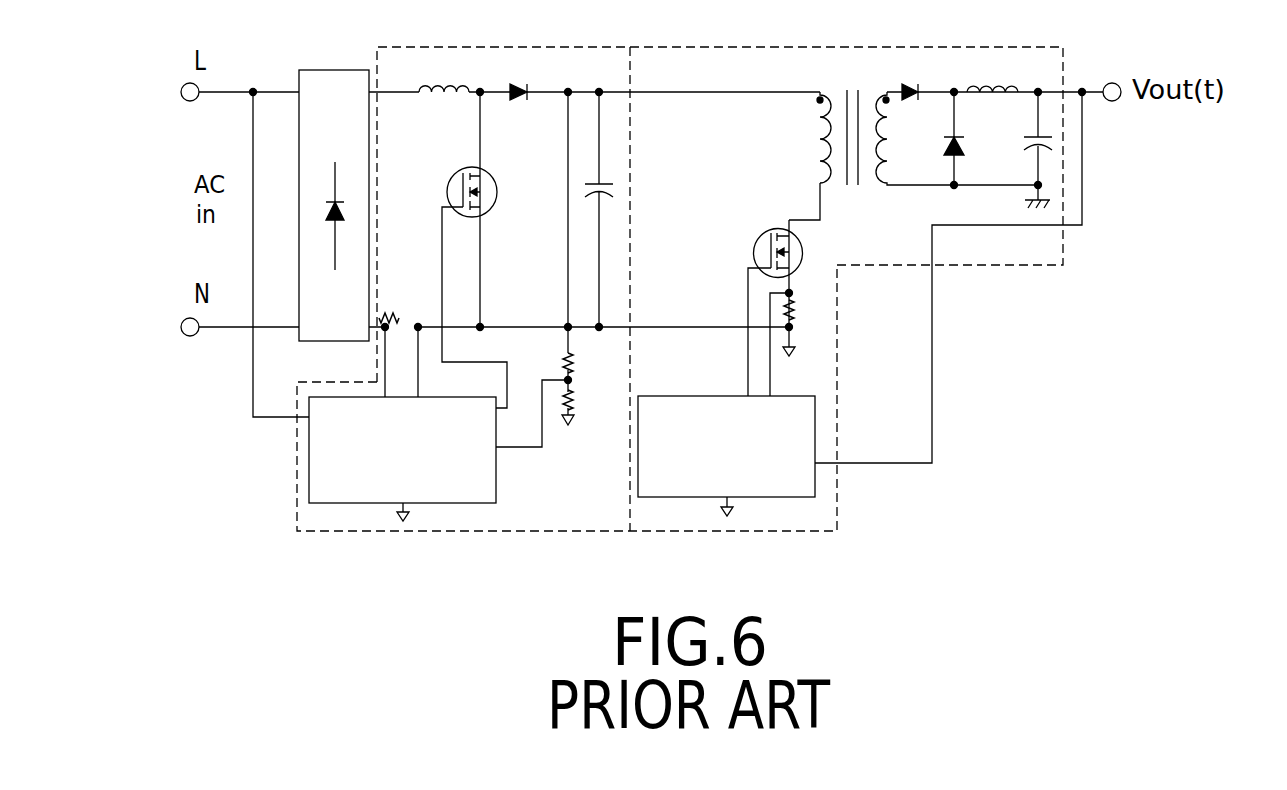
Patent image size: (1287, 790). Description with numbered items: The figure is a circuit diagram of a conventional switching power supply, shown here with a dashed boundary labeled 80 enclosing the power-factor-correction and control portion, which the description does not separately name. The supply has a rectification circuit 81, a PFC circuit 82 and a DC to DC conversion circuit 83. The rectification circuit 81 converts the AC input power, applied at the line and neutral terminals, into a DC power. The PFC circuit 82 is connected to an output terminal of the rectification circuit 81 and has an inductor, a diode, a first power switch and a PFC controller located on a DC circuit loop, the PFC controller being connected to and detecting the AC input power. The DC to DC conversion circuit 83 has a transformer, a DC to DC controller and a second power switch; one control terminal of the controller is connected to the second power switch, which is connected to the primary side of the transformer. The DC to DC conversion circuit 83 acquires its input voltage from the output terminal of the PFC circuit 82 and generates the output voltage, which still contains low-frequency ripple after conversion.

The power converter (prior art) 80 is at (280, 464).
The rectification circuit 81 is at (319, 70).
The PFC circuit 82 is at (478, 47).
The DC to DC conversion circuit 83 is at (1063, 68).